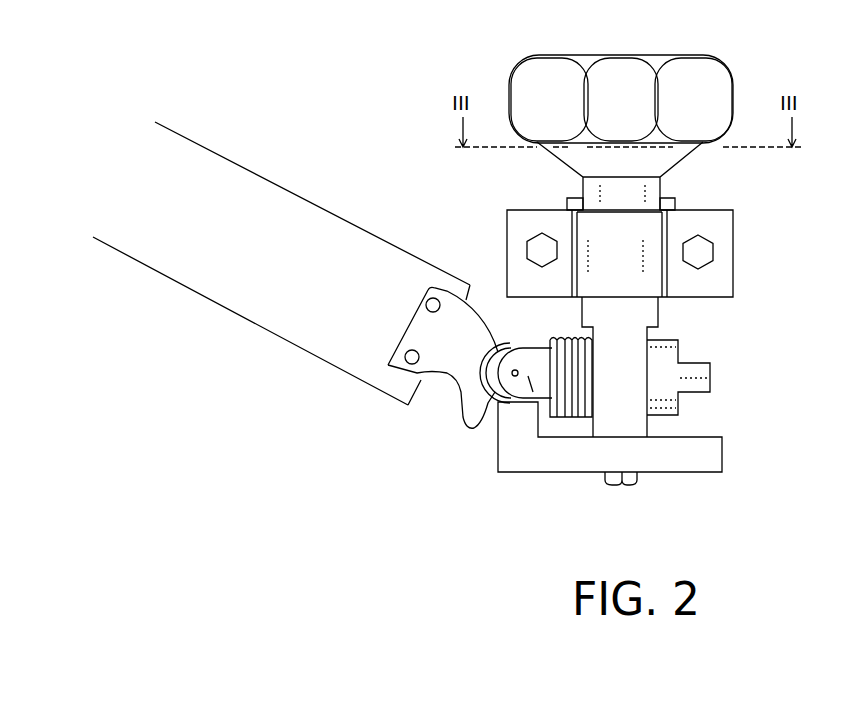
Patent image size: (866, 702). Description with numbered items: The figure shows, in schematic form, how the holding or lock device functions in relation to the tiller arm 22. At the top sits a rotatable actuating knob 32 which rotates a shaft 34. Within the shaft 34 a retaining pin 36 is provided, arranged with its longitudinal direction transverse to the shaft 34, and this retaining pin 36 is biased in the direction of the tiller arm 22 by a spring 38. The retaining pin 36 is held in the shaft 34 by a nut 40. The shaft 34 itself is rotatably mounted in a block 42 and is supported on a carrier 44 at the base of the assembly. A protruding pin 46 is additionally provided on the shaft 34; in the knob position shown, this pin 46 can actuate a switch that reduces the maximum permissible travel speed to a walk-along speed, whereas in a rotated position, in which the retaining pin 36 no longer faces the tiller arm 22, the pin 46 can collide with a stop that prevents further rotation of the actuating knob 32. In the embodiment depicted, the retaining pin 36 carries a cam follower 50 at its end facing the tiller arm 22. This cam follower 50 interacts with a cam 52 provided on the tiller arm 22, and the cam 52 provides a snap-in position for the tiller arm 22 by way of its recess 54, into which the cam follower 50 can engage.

The tiller arm 22 is at (237, 190).
The actuating knob 32 is at (728, 70).
The shaft 34 is at (662, 193).
The retaining pin 36 is at (525, 406).
The spring 38 is at (562, 338).
The nut 40 is at (670, 338).
The block 42 is at (735, 236).
The carrier 44 is at (525, 476).
The protruding pin 46 is at (577, 197).
The cam follower 50 is at (503, 342).
The cam 52 is at (458, 400).
The recess 54 is at (480, 425).